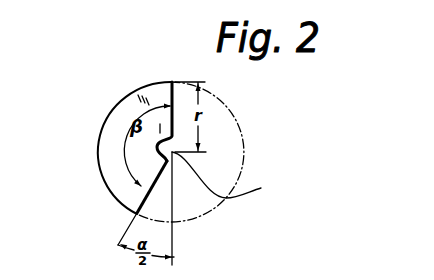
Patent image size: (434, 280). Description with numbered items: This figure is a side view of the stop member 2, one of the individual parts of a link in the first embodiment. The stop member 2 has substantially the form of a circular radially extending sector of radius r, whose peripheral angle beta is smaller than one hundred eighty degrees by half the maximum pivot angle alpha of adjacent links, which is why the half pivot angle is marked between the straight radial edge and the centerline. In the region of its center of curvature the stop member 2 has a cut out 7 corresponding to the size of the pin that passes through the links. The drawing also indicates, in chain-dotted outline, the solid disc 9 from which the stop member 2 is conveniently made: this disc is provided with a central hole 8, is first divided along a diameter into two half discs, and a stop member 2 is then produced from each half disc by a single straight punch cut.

The stop member 2 is at (117, 113).
The cut out 7 is at (158, 150).
The central hole 8 is at (224, 175).
The solid disc 9 is at (244, 143).